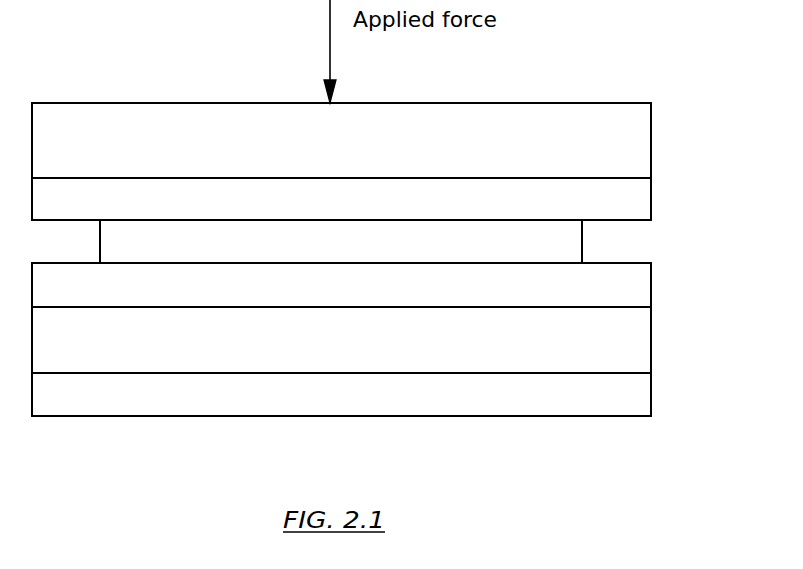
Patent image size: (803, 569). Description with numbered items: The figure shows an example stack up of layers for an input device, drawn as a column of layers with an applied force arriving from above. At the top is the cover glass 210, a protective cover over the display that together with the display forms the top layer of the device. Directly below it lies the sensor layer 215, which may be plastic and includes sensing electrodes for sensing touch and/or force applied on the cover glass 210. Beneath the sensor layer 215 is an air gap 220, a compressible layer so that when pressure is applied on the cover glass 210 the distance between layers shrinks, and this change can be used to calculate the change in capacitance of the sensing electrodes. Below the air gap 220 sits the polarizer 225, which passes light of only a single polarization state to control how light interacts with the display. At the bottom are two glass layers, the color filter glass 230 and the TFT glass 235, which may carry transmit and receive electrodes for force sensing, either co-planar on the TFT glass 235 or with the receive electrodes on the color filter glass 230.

The cover glass 210 is at (437, 152).
The sensor layer 215 is at (418, 212).
The air gap 220 is at (390, 254).
The polarizer 225 is at (428, 296).
The color filter glass 230 is at (473, 350).
The TFT glass 235 is at (438, 406).